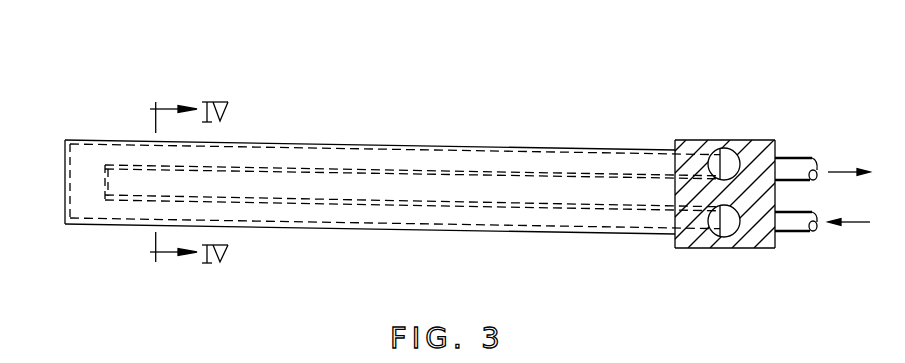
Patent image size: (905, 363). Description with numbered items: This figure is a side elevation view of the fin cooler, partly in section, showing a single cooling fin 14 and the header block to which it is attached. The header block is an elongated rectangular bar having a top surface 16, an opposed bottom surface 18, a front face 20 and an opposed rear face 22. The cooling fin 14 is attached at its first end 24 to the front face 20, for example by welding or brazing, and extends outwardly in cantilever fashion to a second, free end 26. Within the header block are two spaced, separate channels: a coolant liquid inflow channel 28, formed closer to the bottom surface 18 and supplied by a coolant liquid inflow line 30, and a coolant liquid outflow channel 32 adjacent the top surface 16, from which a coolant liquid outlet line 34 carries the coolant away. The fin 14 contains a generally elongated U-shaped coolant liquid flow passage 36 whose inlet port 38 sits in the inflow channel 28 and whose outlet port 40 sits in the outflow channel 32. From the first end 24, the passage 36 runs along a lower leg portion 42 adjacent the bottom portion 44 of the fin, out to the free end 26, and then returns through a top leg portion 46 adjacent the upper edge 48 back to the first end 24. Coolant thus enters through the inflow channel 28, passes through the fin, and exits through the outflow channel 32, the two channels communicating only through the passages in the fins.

The cooling fin 14 is at (409, 129).
The top surface 16 is at (717, 141).
The bottom surface 18 is at (703, 249).
The front face 20 is at (677, 243).
The rear face 22 is at (776, 205).
The first end 24 is at (677, 152).
The free end 26 is at (65, 170).
The coolant liquid inflow channel 28 is at (725, 234).
The coolant liquid inflow line 30 is at (815, 230).
The coolant liquid outflow channel 32 is at (728, 155).
The coolant liquid outlet line 34 is at (815, 163).
The coolant liquid flow passage 36 is at (356, 219).
The inlet port 38 is at (776, 243).
The outlet port 40 is at (776, 158).
The lower leg portion 42 is at (408, 218).
The bottom portion 44 is at (510, 232).
The top leg portion 46 is at (290, 158).
The upper edge 48 is at (477, 148).